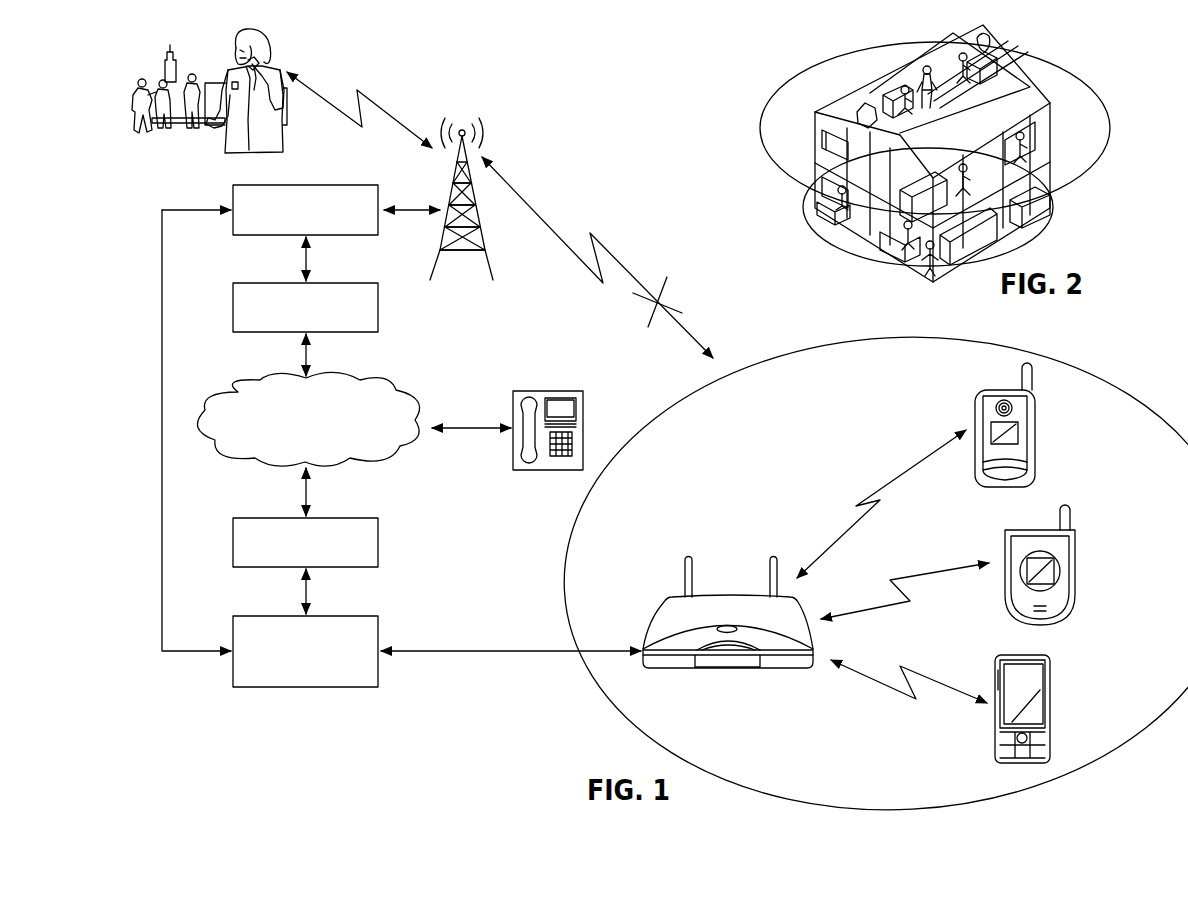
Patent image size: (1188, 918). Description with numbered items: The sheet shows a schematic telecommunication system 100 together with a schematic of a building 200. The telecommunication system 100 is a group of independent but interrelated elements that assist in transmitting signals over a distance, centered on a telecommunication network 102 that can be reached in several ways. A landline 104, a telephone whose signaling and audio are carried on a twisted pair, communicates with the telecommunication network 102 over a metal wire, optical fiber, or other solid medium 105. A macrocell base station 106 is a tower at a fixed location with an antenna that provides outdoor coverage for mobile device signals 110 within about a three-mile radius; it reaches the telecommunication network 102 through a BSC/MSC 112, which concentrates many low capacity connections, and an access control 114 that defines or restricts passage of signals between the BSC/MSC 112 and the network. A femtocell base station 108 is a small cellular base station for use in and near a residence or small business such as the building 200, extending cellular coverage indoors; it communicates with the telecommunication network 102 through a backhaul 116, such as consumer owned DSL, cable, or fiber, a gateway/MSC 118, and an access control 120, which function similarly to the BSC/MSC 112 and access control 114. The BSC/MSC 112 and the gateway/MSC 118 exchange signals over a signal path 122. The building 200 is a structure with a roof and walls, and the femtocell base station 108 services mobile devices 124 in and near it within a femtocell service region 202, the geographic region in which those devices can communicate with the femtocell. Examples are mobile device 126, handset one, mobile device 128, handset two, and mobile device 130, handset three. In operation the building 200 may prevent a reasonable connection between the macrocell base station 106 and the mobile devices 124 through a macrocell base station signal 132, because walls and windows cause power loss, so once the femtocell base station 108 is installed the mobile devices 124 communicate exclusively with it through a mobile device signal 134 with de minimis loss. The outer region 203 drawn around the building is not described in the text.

In FIG. 1, the telecommunication system 100 is at (650, 134).
In FIG. 1, the telecommunication network 102 is at (368, 378).
In FIG. 1, the landline 104 is at (549, 391).
In FIG. 1, the solid medium 105 is at (454, 428).
In FIG. 1, the macrocell base station 106 is at (487, 255).
In FIG. 1, the femtocell base station 108 is at (678, 603).
In FIG. 1, the mobile device signals 110 is at (266, 50).
In FIG. 1, the BSC/MSC 112 is at (318, 185).
In FIG. 1, the access control 114 is at (318, 283).
In FIG. 1, the backhaul 116 is at (440, 651).
In FIG. 1, the gateway/MSC 118 is at (338, 616).
In FIG. 1, the access control 120 is at (330, 518).
In FIG. 1, the signal path 122 is at (162, 378).
In FIG. 1, the mobile devices 124 is at (1030, 410).
In FIG. 1, the mobile device 126 is at (1025, 436).
In FIG. 1, the mobile device 128 is at (1074, 556).
In FIG. 1, the mobile device 130 is at (1050, 676).
In FIG. 1, the macrocell base station signal 132 is at (542, 218).
In FIG. 1, the mobile device signal 134 is at (929, 462).
In FIG. 1, the building 200 is at (870, 573).
In FIG. 2, the building 200 is at (1046, 208).
In FIG. 2, the femtocell service region 202 is at (822, 246).
In FIG. 2, the outer coverage area 203 is at (1103, 102).